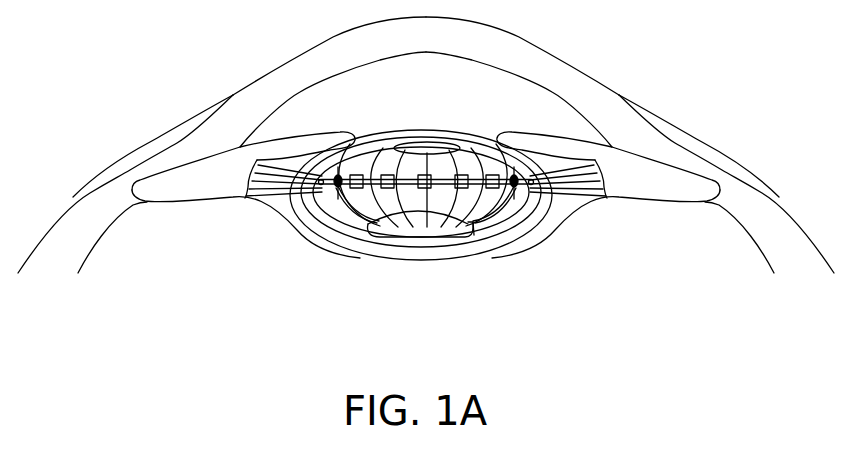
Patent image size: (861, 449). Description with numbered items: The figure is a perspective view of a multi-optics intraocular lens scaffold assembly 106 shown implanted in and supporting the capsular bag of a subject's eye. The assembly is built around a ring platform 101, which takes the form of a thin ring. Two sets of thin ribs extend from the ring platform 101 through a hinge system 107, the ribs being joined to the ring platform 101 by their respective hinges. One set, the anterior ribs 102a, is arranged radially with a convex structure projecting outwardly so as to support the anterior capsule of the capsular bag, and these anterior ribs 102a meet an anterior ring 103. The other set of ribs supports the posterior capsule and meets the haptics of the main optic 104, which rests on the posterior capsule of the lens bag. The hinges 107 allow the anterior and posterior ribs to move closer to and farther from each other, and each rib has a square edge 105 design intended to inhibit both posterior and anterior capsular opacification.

The ring platform 101 is at (328, 197).
The anterior ribs 102a is at (377, 147).
The anterior ring 103 is at (428, 143).
The main optic 104 is at (440, 247).
The square edge 105 is at (475, 233).
The multi-optics intraocular lens scaffold assembly 106 is at (353, 200).
The hinge system 107 is at (484, 173).